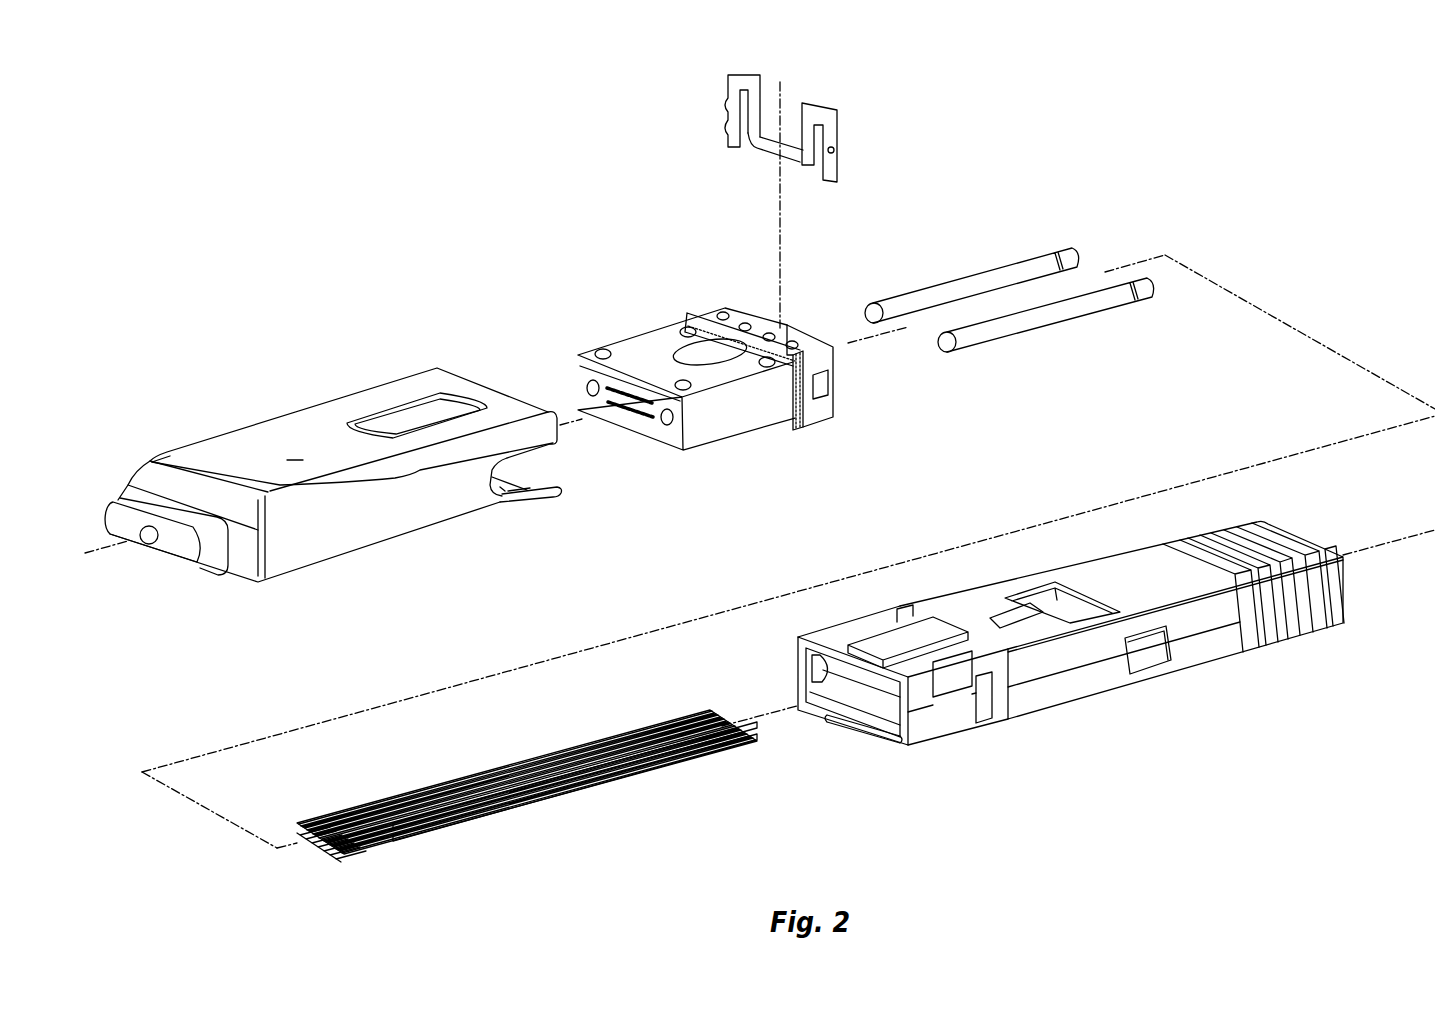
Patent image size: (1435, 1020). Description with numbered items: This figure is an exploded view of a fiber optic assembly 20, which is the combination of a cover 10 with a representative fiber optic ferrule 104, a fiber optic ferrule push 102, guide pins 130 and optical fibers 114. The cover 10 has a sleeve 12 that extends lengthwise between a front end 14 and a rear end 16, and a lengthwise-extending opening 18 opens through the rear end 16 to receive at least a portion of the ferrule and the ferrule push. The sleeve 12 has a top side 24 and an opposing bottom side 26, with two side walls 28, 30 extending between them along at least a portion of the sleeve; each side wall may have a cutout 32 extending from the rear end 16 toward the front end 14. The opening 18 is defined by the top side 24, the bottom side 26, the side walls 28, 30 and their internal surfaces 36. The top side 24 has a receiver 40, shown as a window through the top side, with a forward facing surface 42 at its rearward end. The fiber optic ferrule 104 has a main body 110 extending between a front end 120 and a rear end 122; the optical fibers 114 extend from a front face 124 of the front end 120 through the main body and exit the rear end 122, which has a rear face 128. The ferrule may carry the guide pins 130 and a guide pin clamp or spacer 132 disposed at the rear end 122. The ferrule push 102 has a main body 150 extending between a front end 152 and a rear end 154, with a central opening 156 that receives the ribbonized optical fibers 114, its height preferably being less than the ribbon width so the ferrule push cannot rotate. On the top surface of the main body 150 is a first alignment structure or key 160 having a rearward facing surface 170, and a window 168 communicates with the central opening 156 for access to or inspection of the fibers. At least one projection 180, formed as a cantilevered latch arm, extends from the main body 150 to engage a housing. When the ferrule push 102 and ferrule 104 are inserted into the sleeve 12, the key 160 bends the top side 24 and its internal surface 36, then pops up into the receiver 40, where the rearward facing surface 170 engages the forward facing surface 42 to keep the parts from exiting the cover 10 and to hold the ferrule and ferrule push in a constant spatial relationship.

The cover 10 is at (359, 465).
The sleeve 12 is at (402, 525).
The front end 14 is at (165, 545).
The rear end 16 is at (560, 438).
The lengthwise-extending opening 18 is at (553, 463).
The fiber optic assembly 20 is at (1087, 130).
The top side 24 is at (349, 430).
The bottom side 26 is at (288, 580).
The side wall 28 is at (335, 520).
The side wall 30 is at (207, 432).
The cutout 32 is at (535, 508).
The internal surfaces 36 is at (503, 510).
The receiver 40 is at (417, 375).
The forward facing surface 42 is at (447, 398).
The fiber optic ferrule push 102 is at (1082, 661).
The fiber optic ferrule 104 is at (730, 383).
The main body 110 is at (750, 423).
The optical fibers 114 is at (573, 792).
The front end 120 is at (672, 447).
The rear end 122 is at (835, 418).
The front face 124 is at (580, 395).
The rear face 128 is at (837, 388).
The guide pins 130 is at (1145, 272).
The guide pin clamp or spacer 132 is at (845, 163).
The main body 150 is at (1205, 660).
The front end 152 is at (905, 750).
The rear end 154 is at (1355, 605).
The central opening 156 is at (860, 735).
The first alignment structure or key 160 is at (918, 628).
The window 168 is at (1090, 592).
The rearward facing surface 170 is at (952, 625).
The projection or latch 180 is at (995, 712).